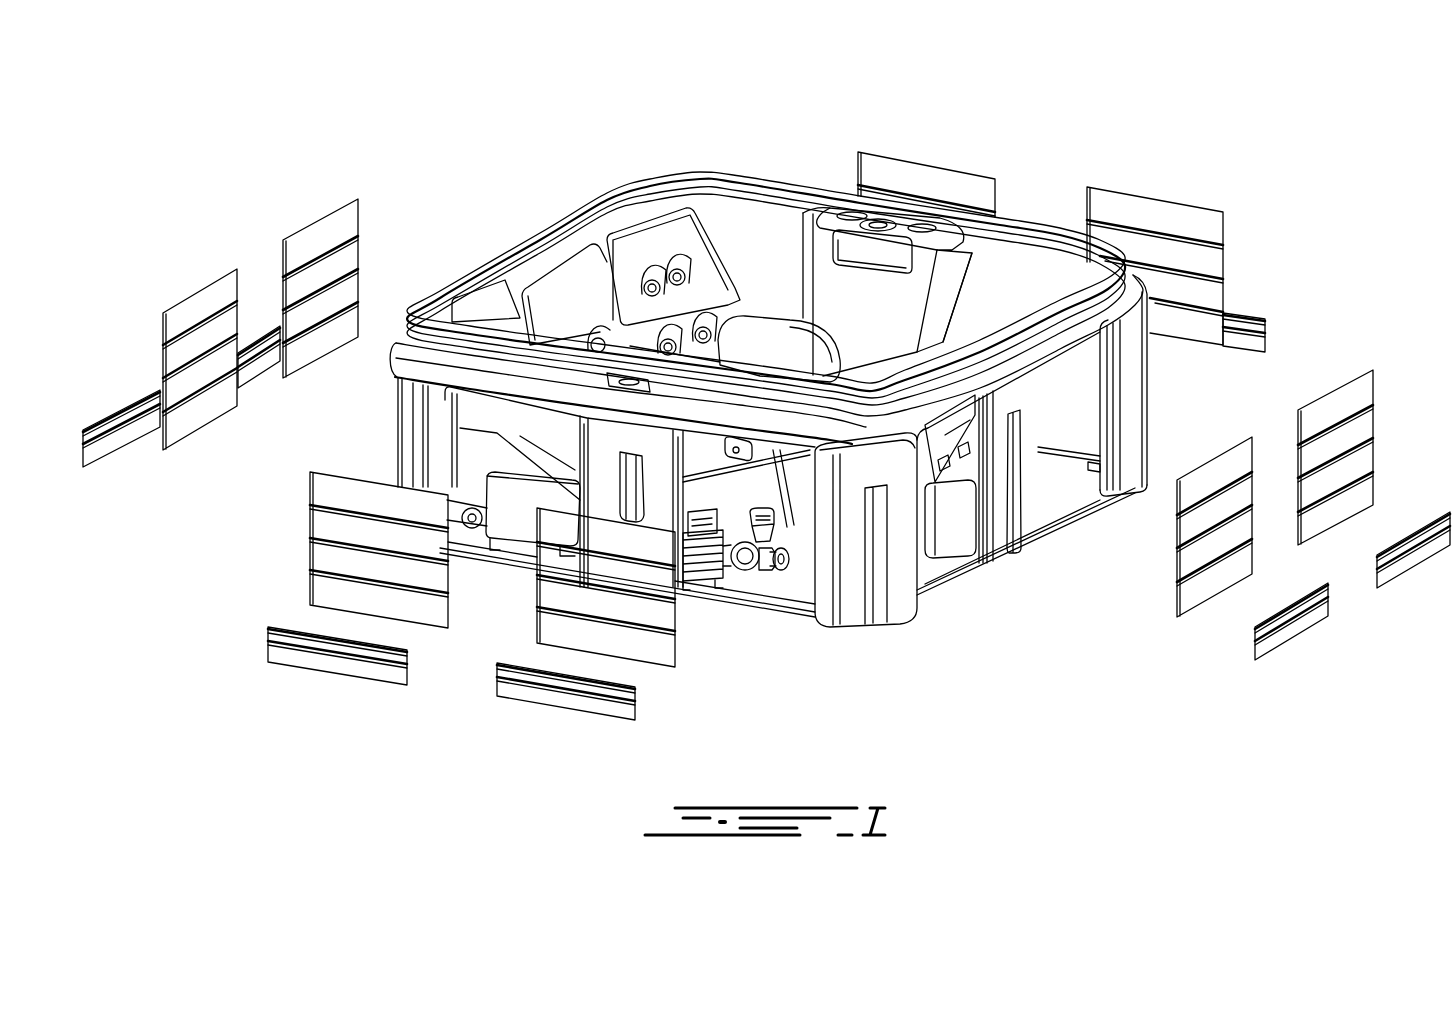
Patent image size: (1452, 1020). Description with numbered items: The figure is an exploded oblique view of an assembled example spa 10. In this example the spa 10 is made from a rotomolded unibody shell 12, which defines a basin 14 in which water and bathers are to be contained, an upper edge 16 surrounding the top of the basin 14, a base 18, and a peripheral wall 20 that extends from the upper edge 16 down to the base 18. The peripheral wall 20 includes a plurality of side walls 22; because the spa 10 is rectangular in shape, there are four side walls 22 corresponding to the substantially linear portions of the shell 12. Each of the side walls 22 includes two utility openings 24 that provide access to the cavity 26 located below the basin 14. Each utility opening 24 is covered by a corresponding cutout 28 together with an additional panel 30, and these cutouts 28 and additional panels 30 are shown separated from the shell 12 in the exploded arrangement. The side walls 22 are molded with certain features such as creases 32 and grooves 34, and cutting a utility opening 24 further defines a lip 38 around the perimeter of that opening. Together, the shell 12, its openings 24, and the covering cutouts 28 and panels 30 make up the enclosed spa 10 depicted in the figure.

The spa 10 is at (457, 198).
The rotomolded unibody shell 12 is at (1037, 225).
The basin 14 is at (760, 237).
The upper edge 16 is at (612, 205).
The base 18 is at (1052, 495).
The peripheral wall 20 is at (873, 571).
The side walls 22 is at (649, 497).
The utility openings 24 is at (786, 572).
The cavity 26 is at (740, 545).
The cutouts 28 is at (1352, 432).
The additional panels 30 is at (1290, 630).
The creases 32 is at (378, 520).
The grooves 34 is at (497, 392).
The lip 38 is at (978, 535).